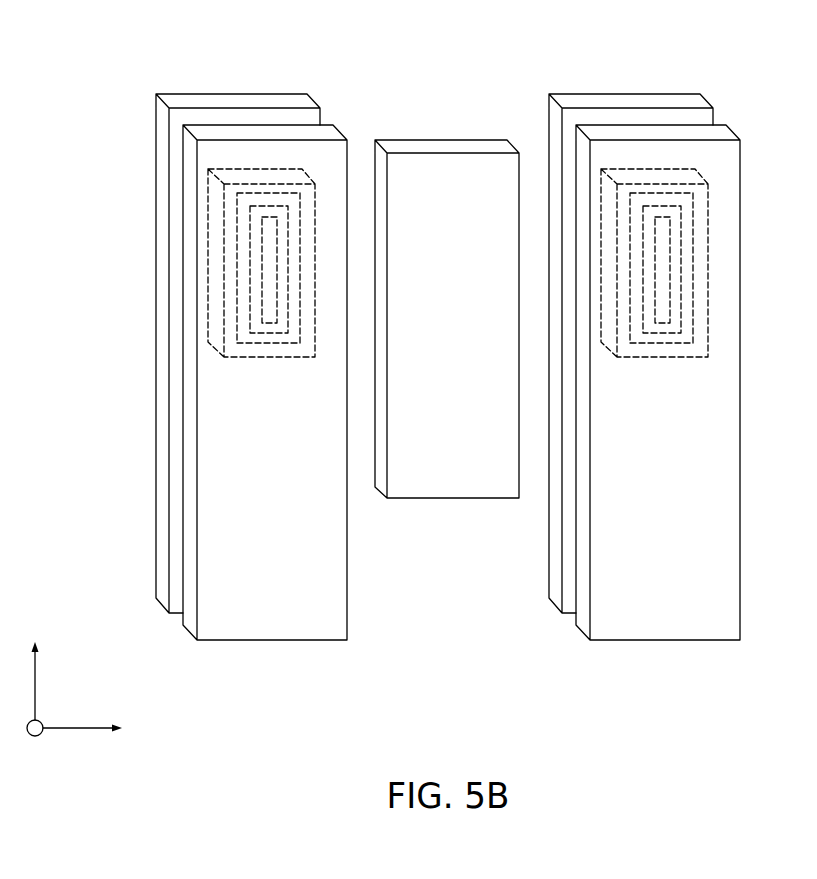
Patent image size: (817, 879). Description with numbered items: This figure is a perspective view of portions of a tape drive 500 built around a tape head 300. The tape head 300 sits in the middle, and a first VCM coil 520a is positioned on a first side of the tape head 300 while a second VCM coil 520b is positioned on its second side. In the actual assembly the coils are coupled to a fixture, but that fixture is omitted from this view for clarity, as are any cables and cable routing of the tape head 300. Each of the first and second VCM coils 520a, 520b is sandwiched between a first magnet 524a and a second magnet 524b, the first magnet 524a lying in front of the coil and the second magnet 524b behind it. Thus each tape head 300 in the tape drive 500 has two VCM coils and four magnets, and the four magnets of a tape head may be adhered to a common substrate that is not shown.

The tape drive 500 is at (117, 82).
The second magnet 524b is at (235, 100).
The first magnet 524a is at (300, 624).
The first VCM coil 520a is at (223, 250).
The second VCM coil 520b is at (708, 250).
The tape head 300 is at (433, 323).